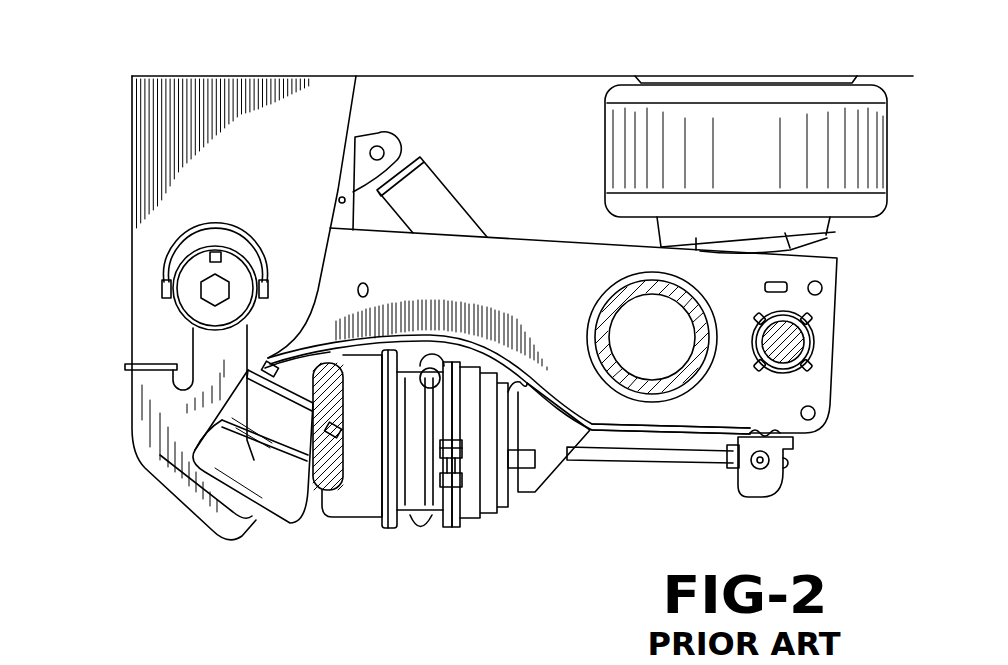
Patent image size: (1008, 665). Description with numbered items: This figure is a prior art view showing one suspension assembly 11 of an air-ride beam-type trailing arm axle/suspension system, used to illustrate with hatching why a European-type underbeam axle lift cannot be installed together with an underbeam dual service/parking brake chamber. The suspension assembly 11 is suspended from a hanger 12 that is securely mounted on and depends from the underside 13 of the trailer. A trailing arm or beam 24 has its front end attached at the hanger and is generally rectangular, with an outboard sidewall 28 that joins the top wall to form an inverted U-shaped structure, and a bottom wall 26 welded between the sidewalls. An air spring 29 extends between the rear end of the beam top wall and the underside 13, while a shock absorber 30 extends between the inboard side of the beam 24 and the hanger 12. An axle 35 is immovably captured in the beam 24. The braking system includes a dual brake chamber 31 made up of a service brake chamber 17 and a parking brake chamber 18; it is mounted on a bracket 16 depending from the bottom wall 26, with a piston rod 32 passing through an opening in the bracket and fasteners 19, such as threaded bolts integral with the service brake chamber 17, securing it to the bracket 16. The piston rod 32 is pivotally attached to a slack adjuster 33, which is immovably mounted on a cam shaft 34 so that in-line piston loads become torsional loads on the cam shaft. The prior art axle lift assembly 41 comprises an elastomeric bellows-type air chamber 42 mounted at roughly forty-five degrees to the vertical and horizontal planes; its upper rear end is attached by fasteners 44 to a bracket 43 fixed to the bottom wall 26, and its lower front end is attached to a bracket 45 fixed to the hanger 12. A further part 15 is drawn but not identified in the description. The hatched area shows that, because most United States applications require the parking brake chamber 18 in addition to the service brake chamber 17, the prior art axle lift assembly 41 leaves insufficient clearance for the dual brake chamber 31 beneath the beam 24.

The suspension assembly 11 is at (545, 218).
The hanger 12 is at (267, 177).
The underside 13 is at (403, 76).
The pivot hub 15 is at (213, 296).
The bracket 16 is at (552, 463).
The service brake chamber 17 is at (469, 513).
The parking brake chamber 18 is at (358, 508).
The fasteners 19 is at (512, 470).
The beam 24 is at (831, 400).
The bottom wall 26 is at (637, 428).
The outboard sidewall 28 is at (565, 314).
The air spring 29 is at (730, 139).
The shock absorber 30 is at (428, 197).
The dual brake chamber 31 is at (447, 519).
The piston rod 32 is at (600, 453).
The slack adjuster 33 is at (767, 478).
The cam shaft 34 is at (795, 344).
The axle 35 is at (673, 384).
The prior art axle lift assembly 41 is at (183, 535).
The air chamber 42 is at (283, 526).
The bracket 43 is at (343, 353).
The fasteners 44 is at (278, 368).
The bracket 45 is at (147, 432).